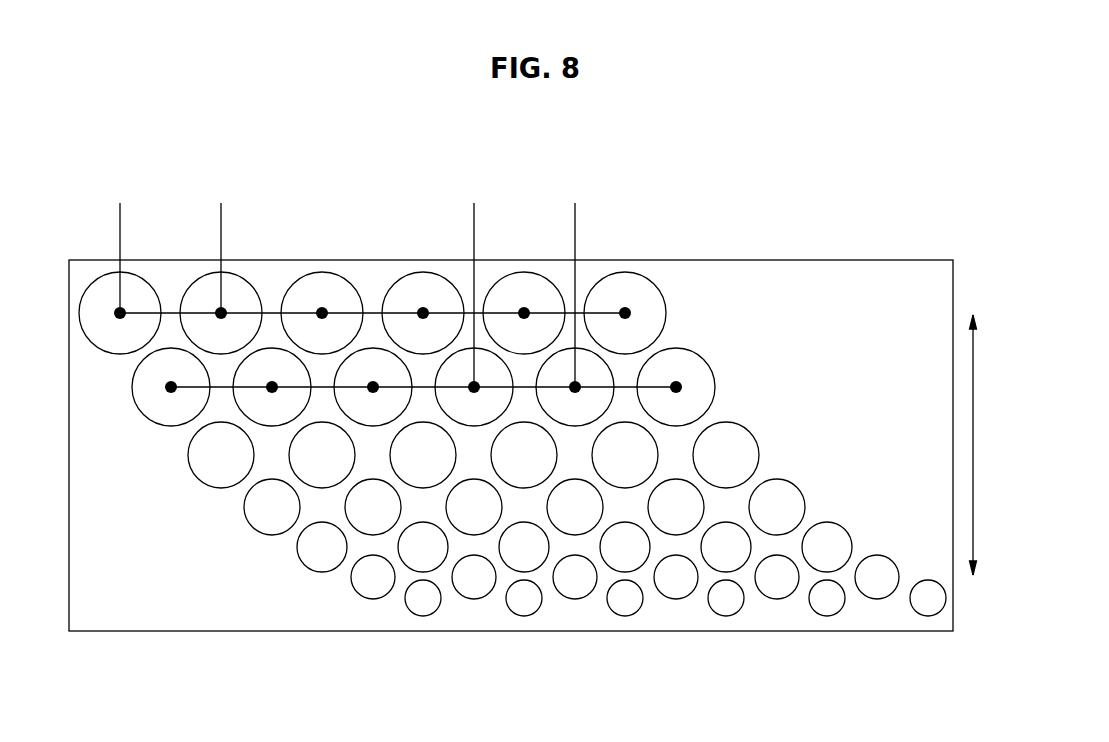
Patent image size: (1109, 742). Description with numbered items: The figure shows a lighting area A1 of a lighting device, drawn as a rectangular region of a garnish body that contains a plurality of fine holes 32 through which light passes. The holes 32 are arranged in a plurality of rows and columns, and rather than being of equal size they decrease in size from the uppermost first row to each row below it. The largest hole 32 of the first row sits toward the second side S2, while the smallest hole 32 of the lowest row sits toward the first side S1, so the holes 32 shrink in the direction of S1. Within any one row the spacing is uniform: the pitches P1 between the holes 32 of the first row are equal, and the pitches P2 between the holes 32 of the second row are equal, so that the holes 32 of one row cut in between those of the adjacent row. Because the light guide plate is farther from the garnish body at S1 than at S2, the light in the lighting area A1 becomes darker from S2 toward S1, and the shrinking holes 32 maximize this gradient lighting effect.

The hole 32 is at (327, 272).
The lighting area A1 is at (753, 260).
The pitch of holes in first row P1 is at (221, 208).
The pitch of holes in second row P2 is at (575, 208).
The first side S1 is at (975, 527).
The second side S2 is at (973, 367).